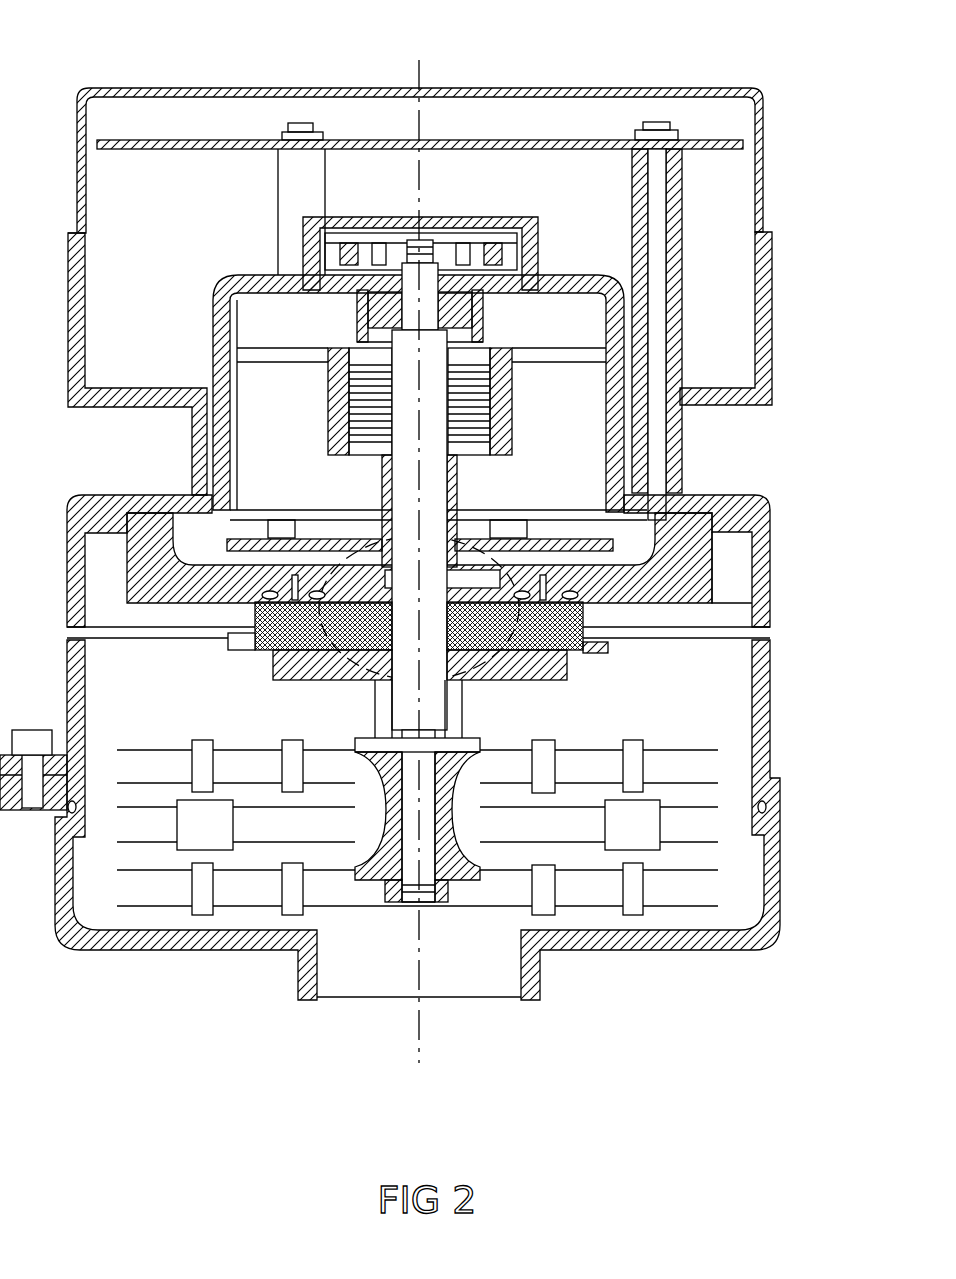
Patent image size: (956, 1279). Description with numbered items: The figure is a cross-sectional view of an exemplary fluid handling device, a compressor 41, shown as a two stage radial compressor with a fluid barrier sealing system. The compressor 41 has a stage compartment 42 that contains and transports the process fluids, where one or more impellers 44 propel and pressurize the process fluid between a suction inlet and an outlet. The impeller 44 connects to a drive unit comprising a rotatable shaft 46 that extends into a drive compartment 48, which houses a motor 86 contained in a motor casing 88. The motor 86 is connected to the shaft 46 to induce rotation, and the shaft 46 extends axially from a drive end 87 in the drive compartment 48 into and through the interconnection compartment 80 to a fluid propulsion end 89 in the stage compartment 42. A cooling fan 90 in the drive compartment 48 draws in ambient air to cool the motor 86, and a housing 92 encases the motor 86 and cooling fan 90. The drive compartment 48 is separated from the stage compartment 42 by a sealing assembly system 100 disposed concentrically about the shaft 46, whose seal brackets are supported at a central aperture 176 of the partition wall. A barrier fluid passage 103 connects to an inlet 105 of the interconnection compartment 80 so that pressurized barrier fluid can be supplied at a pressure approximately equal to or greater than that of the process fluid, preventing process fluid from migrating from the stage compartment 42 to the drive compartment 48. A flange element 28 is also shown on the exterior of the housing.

The compressor 41 is at (433, 560).
The housing 92 is at (763, 127).
The drive end 87 is at (430, 238).
The motor casing 88 is at (620, 303).
The motor 86 is at (336, 405).
The rotatable shaft 46 is at (400, 485).
The drive compartment 48 is at (596, 430).
The cooling fan 90 is at (597, 542).
The interconnection compartment 80 is at (600, 585).
The inlet 105 is at (600, 614).
The barrier fluid passage 103 is at (715, 633).
The central aperture 176 is at (590, 672).
The sealing assembly system 100 is at (250, 623).
The impeller 44 is at (572, 750).
The stage compartment 42 is at (718, 726).
The mounting flange 28 is at (772, 765).
The fluid propulsion end 89 is at (430, 908).